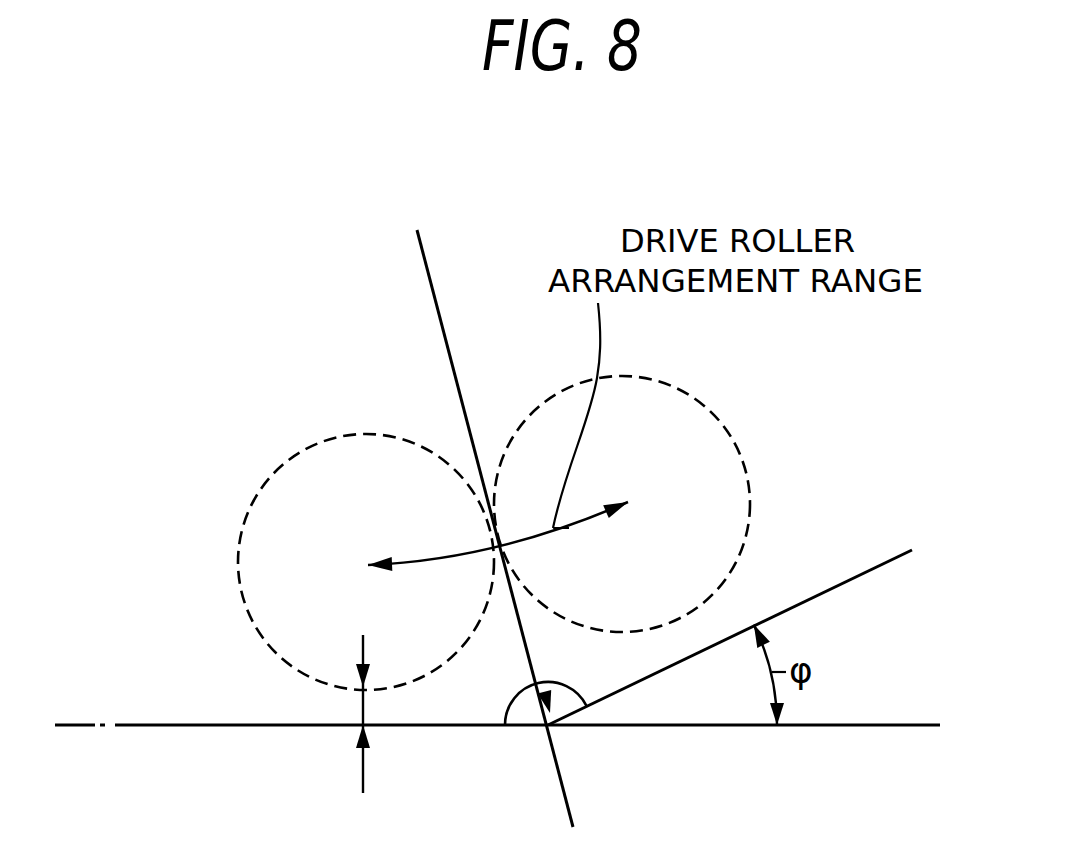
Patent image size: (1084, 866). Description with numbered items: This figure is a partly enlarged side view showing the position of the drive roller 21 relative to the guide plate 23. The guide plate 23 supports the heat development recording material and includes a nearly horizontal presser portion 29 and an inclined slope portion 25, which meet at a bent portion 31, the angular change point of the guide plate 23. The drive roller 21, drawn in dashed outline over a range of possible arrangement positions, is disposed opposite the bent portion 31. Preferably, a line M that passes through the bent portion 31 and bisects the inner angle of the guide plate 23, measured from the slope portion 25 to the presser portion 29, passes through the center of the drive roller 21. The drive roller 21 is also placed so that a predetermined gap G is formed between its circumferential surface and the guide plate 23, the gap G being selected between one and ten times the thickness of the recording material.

The drive roller 21 is at (326, 440).
The guide plate 23 is at (758, 745).
The slope portion 25 is at (863, 572).
The presser portion 29 is at (200, 725).
The bent portion 31 is at (557, 684).
The line M is at (456, 381).
The gap G is at (363, 705).